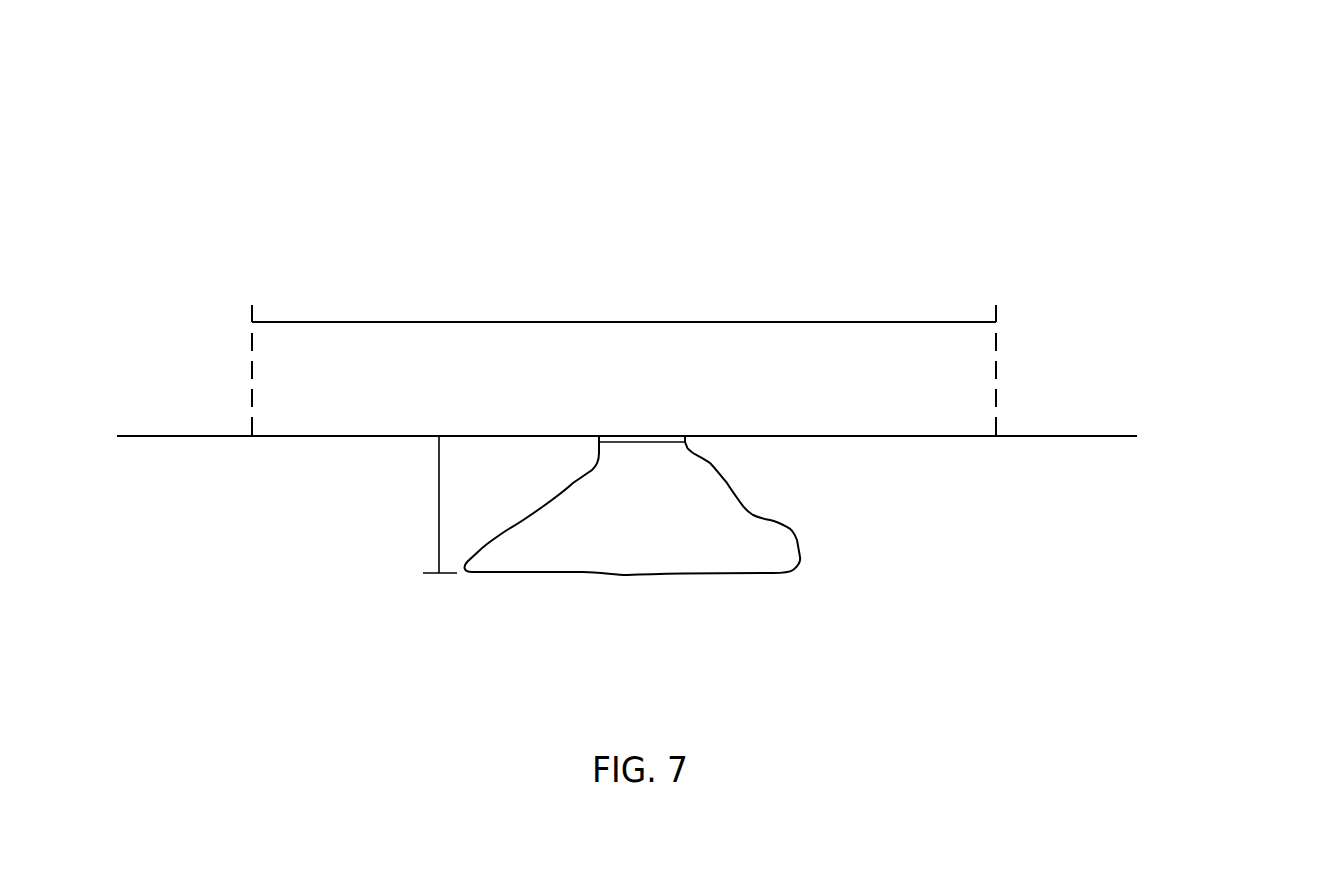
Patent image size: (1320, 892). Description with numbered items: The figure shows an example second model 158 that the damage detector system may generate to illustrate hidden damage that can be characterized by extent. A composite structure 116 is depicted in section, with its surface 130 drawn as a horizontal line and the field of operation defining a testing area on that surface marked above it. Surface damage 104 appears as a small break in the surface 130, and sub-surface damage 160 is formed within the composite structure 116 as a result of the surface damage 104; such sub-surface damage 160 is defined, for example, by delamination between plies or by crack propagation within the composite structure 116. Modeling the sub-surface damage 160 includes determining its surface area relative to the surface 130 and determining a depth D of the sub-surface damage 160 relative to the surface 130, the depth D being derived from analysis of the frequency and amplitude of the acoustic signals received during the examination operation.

The second model 158 is at (1013, 160).
The composite structure 116 is at (1173, 390).
The surface 130 is at (1083, 436).
The surface damage 104 is at (648, 442).
The sub-surface damage 160 is at (793, 568).
The depth D is at (439, 496).